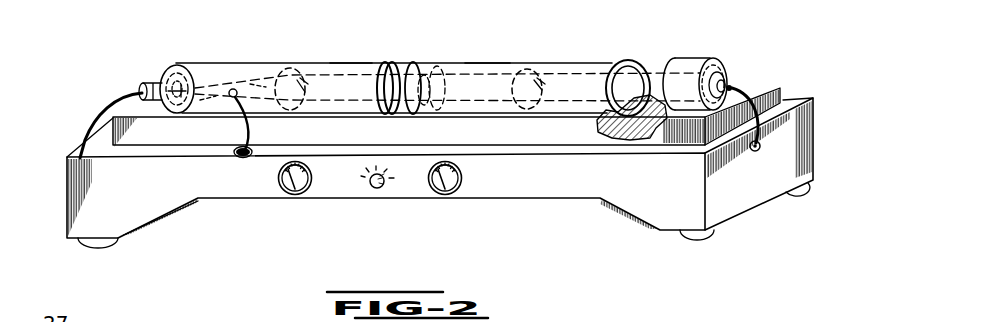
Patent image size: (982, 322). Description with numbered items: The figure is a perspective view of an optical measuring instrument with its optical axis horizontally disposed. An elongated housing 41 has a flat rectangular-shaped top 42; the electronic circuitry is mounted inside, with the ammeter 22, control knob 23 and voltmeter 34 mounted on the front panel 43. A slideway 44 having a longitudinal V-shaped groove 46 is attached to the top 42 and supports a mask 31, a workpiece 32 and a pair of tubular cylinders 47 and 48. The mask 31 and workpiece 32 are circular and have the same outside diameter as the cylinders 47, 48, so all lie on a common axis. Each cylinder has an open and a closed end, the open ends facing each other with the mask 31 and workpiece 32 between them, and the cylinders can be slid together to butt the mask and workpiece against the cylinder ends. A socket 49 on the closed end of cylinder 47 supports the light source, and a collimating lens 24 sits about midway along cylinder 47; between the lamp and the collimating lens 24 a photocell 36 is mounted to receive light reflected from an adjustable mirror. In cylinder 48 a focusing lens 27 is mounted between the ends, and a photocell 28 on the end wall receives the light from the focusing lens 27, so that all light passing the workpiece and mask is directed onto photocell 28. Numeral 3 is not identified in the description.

The electrode elements 3 is at (208, 90).
The ammeter 22 is at (294, 197).
The control knob 23 is at (373, 188).
The collimating lens 24 is at (304, 78).
The focusing lens 27 is at (540, 88).
The photocell 28 is at (730, 84).
The mask 31 is at (393, 63).
The workpiece 32 is at (412, 63).
The voltmeter 34 is at (456, 195).
The photocell 36 is at (233, 90).
The housing 41 is at (656, 200).
The top 42 is at (550, 147).
The front panel 43 is at (215, 190).
The slideway 44 is at (585, 127).
The V-shaped groove 46 is at (622, 110).
The tubular cylinder 47 is at (350, 63).
The tubular cylinder 48 is at (487, 63).
The socket 49 is at (148, 83).